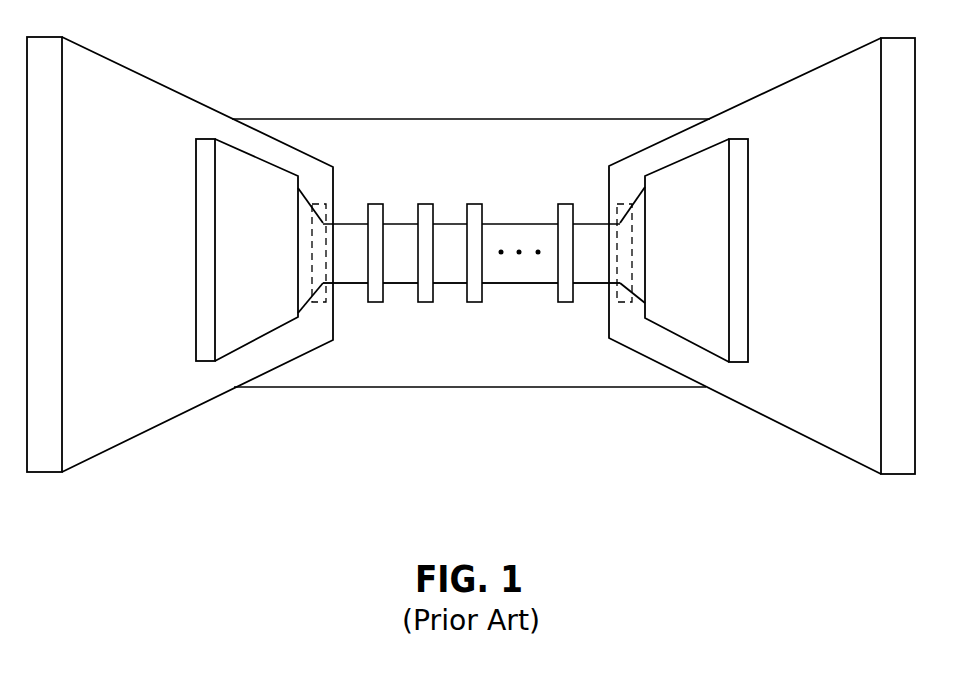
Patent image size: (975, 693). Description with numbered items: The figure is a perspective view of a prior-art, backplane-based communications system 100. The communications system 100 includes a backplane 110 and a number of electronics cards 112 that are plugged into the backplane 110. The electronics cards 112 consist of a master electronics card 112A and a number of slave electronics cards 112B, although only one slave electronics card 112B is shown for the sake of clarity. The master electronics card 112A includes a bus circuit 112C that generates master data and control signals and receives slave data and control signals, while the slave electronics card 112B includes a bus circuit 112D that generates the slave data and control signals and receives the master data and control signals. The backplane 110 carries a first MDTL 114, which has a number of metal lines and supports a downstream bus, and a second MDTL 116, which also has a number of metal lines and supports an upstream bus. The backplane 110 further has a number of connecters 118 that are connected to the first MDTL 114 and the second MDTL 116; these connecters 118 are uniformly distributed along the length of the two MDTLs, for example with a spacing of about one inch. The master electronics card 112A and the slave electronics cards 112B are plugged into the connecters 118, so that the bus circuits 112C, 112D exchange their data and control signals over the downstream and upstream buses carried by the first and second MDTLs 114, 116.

The backplane-based communications system 100 is at (645, 41).
The backplane 110 is at (515, 132).
The electronics cards 112 is at (120, 432).
The master electronics card 112A is at (83, 450).
The slave electronics card 112B is at (864, 452).
The bus circuit 112C is at (196, 247).
The bus circuit 112D is at (748, 246).
The first MDTL 114 is at (349, 221).
The second MDTL 116 is at (520, 284).
The connecters 118 is at (477, 203).